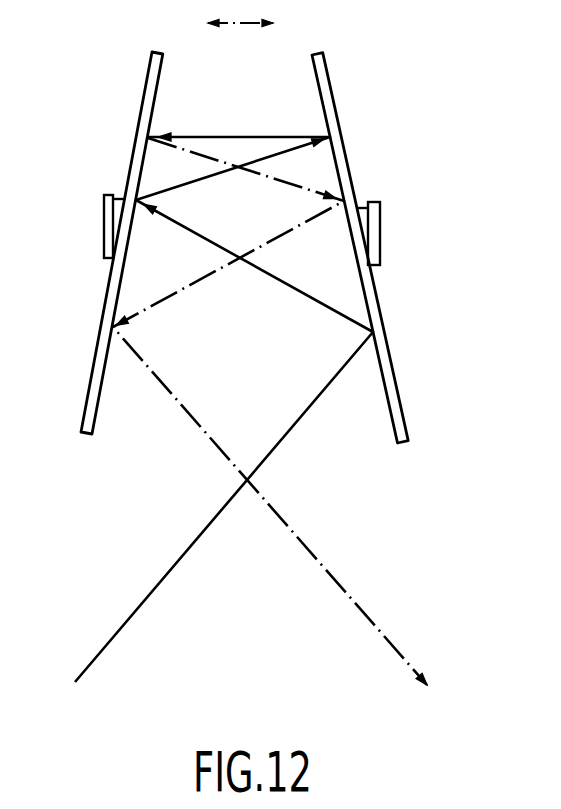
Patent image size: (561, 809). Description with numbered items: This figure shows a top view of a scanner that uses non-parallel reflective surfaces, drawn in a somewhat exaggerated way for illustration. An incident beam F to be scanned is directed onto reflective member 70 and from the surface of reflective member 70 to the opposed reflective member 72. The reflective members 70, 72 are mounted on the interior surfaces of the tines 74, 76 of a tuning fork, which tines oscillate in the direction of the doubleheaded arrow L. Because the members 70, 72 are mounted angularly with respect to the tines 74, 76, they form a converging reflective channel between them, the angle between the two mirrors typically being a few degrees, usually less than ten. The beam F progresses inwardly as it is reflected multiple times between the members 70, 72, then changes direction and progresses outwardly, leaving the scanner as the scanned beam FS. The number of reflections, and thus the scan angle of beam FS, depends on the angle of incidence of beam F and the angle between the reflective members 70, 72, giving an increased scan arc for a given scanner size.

The reflective member 70 is at (403, 412).
The opposed reflective member 72 is at (90, 382).
The tine 74 is at (382, 228).
The tine 76 is at (104, 228).
The incident beam F is at (142, 602).
The scanned beam FS is at (377, 630).
The doubleheaded arrow L is at (251, 16).